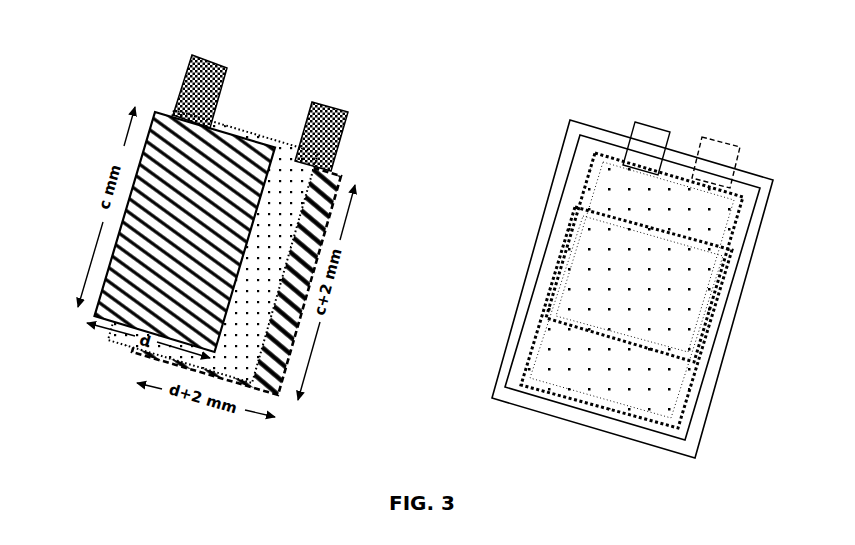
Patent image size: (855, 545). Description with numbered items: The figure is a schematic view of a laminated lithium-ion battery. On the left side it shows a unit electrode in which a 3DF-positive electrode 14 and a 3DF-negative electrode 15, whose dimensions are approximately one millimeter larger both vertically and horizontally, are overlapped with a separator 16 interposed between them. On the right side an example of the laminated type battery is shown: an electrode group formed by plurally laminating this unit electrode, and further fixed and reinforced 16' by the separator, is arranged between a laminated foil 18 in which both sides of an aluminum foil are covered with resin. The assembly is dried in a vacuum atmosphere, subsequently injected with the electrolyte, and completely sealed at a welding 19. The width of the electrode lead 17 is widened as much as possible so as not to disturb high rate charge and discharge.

The 3DF-positive electrode 14 is at (242, 203).
The 3DF-negative electrode 15 is at (272, 305).
The separator 16 is at (352, 264).
The separator fixing and reinforcing the electrode group 16' is at (578, 317).
The electrode lead 17 is at (647, 133).
The laminated foil 18 is at (758, 236).
The welding 19 is at (741, 272).